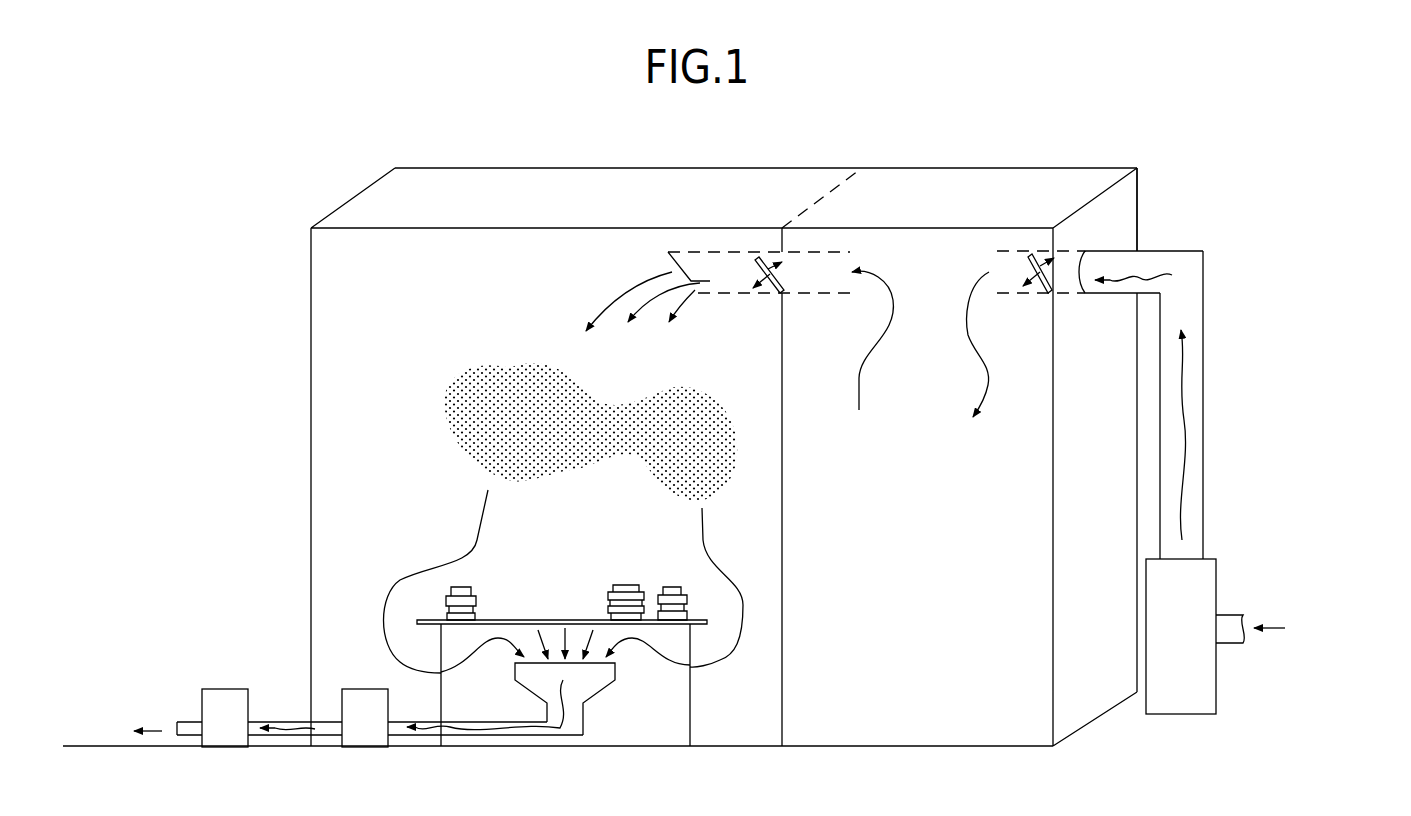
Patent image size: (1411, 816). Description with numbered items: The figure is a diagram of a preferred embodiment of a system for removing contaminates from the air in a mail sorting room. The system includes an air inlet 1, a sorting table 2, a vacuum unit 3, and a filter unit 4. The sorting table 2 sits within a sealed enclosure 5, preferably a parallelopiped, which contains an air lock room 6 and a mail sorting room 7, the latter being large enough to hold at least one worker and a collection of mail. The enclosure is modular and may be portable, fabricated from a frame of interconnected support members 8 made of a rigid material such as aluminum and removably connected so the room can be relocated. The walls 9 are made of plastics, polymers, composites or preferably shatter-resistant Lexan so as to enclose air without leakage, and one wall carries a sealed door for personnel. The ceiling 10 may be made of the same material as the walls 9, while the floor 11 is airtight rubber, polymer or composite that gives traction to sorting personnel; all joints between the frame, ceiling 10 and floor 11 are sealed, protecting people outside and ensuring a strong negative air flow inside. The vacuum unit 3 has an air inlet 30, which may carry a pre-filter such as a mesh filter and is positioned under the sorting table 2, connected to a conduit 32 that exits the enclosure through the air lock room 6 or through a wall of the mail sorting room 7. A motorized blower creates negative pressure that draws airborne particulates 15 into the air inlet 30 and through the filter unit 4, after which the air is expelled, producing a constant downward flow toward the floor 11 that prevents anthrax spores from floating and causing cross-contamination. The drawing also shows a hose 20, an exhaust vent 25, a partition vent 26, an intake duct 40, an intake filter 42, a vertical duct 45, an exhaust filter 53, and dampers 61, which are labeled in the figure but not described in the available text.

The air inlet 1 is at (693, 242).
The sorting table 2 is at (548, 618).
The vacuum unit 3 is at (538, 697).
The filter unit 4 is at (365, 688).
The sealed enclosure 5 is at (1125, 213).
The air lock room 6 is at (1007, 512).
The mail sorting room 7 is at (375, 388).
The support members 8 is at (347, 203).
The walls 9 is at (311, 458).
The ceiling 10 is at (702, 185).
The floor 11 is at (415, 748).
The airborne particulates 15 is at (490, 380).
The flexible hose 20 is at (415, 575).
The exhaust vent 25 is at (715, 295).
The partition vent 26 is at (846, 250).
The air inlet 30 is at (612, 666).
The conduit 32 is at (192, 735).
The intake duct 40 is at (1188, 280).
The intake filter 42 is at (1204, 573).
The vertical intake duct 45 is at (1197, 510).
The exhaust filter 53 is at (225, 688).
The damper 61 is at (768, 278).